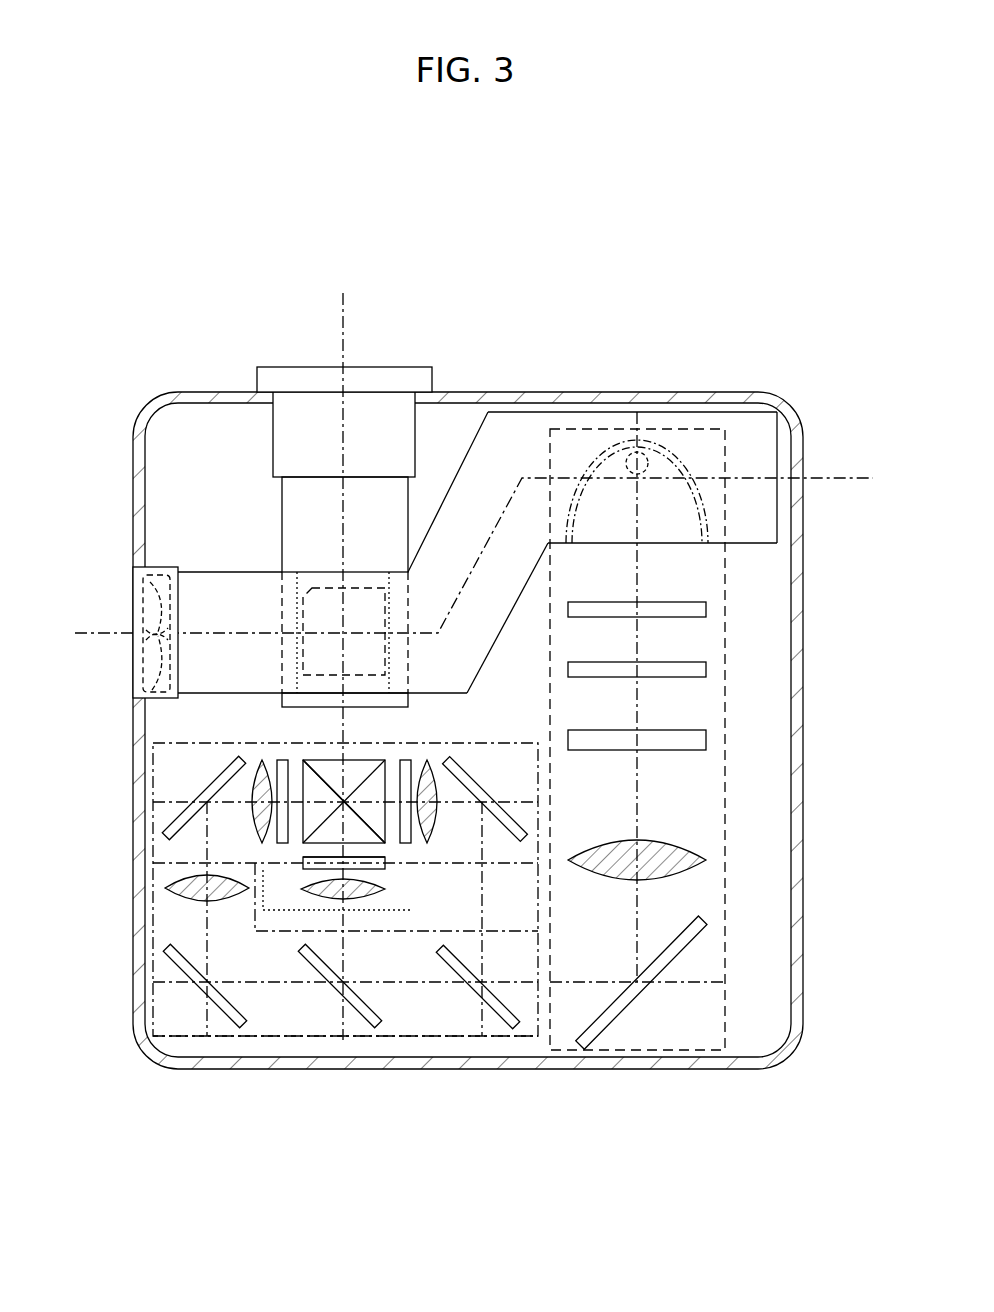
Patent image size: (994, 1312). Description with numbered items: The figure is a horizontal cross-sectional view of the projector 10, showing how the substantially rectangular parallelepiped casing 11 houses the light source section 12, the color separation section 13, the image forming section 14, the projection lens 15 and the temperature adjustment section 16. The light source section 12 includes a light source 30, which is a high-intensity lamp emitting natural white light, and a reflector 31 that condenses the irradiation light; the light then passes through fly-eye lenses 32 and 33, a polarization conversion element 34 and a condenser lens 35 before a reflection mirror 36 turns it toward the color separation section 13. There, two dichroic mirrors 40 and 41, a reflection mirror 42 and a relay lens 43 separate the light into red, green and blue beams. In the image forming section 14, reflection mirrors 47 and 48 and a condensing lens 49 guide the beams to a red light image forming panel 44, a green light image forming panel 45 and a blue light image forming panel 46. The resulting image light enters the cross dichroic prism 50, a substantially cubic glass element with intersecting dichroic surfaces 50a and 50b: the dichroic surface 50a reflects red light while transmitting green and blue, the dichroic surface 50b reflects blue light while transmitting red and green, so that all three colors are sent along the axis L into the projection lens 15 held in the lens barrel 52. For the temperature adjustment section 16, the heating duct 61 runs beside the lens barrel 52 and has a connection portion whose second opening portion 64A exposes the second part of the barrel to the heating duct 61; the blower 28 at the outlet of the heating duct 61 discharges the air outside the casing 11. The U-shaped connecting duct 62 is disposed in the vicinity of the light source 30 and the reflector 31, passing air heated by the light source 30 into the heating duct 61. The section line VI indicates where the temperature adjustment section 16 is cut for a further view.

The projector 10 is at (448, 288).
The casing 11 is at (700, 392).
The light source section 12 is at (722, 800).
The color separation section 13 is at (422, 1033).
The image forming section 14 is at (160, 797).
The projection lens 15 is at (298, 363).
The temperature adjustment section 16 is at (745, 417).
The blower 28 is at (143, 587).
The light source 30 is at (637, 430).
The reflector 31 is at (715, 526).
The fly-eye lens 32 is at (705, 602).
The fly-eye lens 33 is at (705, 662).
The polarization conversion element 34 is at (705, 730).
The condenser lens 35 is at (700, 858).
The reflection mirror 36 is at (705, 920).
The dichroic mirror 40 is at (468, 970).
The dichroic mirror 41 is at (332, 968).
The reflection mirror 42 is at (198, 968).
The relay lens 43 is at (172, 891).
The red light image forming panel 44 is at (412, 762).
The green light image forming panel 45 is at (386, 862).
The blue light image forming panel 46 is at (278, 760).
The reflection mirror 47 is at (463, 777).
The reflection mirror 48 is at (226, 777).
The condensing lens 49 is at (258, 810).
The cross dichroic prism 50 is at (350, 780).
The dichroic surface 50a is at (322, 764).
The dichroic surface 50b is at (320, 840).
The lens barrel 52 is at (302, 516).
The heating duct 61 is at (492, 465).
The connecting duct 62 is at (760, 545).
The second opening portion 64A is at (318, 580).
The optical axis L is at (343, 325).
The section line VI is at (95, 635).